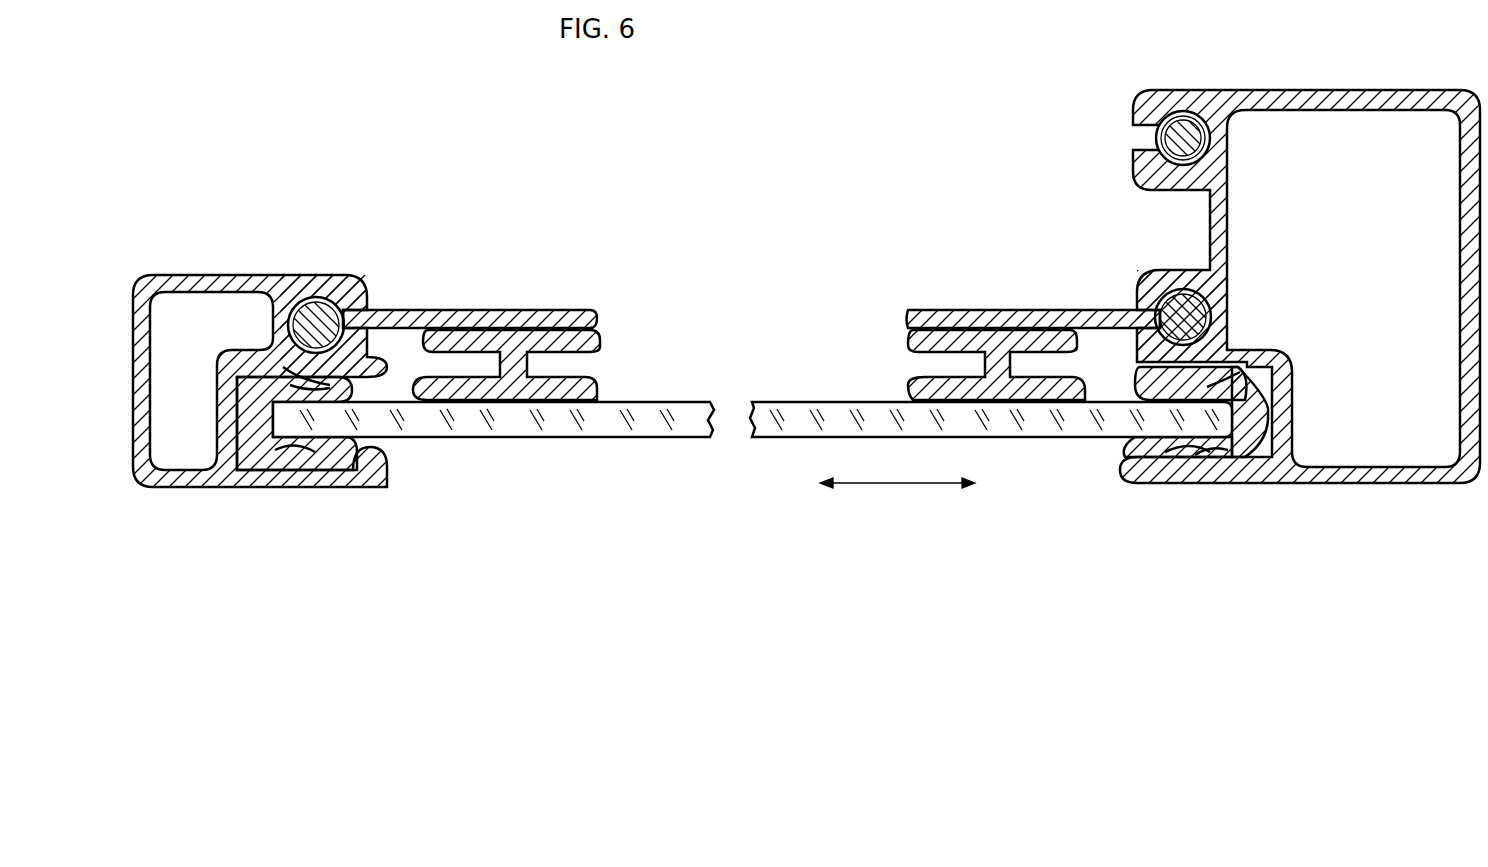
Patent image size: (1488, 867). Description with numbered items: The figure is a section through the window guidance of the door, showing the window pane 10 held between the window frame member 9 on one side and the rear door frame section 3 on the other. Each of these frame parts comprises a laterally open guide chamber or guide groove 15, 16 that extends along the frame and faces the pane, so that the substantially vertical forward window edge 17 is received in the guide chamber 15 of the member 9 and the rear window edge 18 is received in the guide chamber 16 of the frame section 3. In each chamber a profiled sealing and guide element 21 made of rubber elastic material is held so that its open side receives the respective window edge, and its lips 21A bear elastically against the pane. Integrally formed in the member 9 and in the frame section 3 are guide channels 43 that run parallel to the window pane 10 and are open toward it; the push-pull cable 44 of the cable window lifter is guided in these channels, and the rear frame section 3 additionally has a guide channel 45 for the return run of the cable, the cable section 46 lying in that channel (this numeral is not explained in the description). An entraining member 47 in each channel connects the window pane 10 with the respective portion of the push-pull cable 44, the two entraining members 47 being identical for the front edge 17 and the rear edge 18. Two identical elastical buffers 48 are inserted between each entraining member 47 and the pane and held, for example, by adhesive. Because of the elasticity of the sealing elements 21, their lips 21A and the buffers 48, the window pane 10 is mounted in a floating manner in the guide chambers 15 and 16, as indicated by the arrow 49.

The rear door frame section 3 is at (1425, 485).
The window frame member 9 is at (207, 487).
The window pane 10 is at (665, 428).
The guide chamber 15 is at (300, 482).
The guide chamber 16 is at (1193, 452).
The forward window edge 17 is at (318, 430).
The rear window edge 18 is at (1157, 430).
The profiled sealing and guide element 21 is at (372, 485).
The lips 21A is at (283, 367).
The guide channel 43 is at (300, 293).
The push-pull cable 44 is at (314, 322).
The guide channel 45 is at (1188, 130).
The gasket sheath 46 is at (1172, 112).
The entraining member 47 is at (487, 312).
The elastical buffer 48 is at (600, 316).
The arrow 49 is at (900, 486).